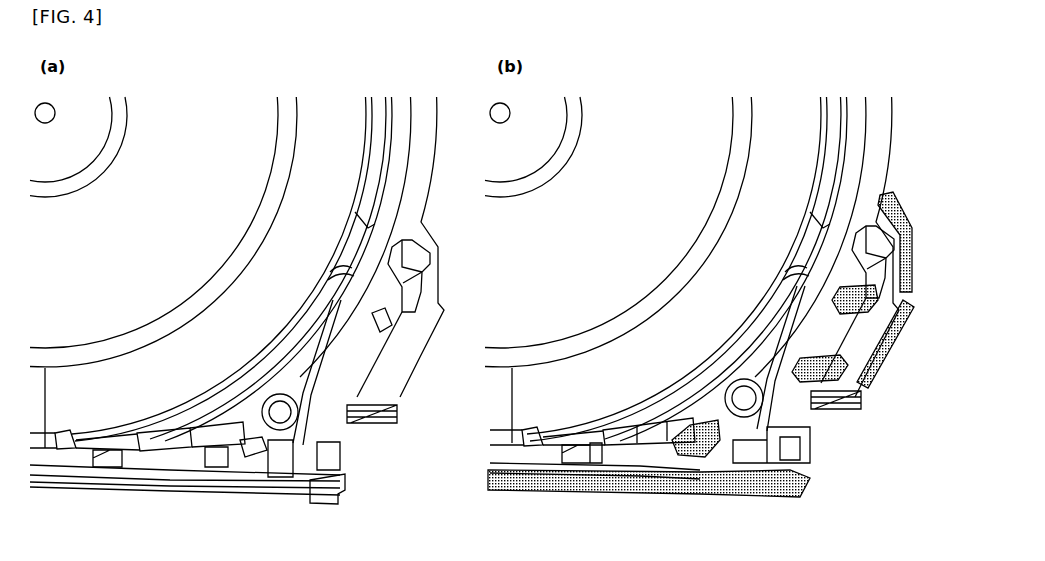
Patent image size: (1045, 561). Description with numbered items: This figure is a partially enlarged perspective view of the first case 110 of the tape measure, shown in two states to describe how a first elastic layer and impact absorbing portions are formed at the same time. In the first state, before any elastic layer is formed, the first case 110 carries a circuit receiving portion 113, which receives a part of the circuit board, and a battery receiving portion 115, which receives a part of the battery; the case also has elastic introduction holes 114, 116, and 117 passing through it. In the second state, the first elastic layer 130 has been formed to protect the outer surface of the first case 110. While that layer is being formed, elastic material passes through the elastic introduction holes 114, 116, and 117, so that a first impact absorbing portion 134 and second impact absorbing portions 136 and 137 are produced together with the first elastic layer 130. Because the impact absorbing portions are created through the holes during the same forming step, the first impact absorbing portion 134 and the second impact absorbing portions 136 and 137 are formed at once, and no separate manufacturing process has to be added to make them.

The first case 110 is at (200, 118).
The circuit receiving portion 113 is at (190, 463).
The elastic introduction hole 114 is at (217, 463).
The battery receiving portion 115 is at (387, 380).
The elastic introduction hole 116 is at (333, 398).
The elastic introduction hole 117 is at (390, 320).
The first elastic layer 130 is at (568, 492).
The first impact absorbing portion 134 is at (695, 480).
The second impact absorbing portion 136 is at (836, 345).
The second impact absorbing portion 137 is at (903, 310).